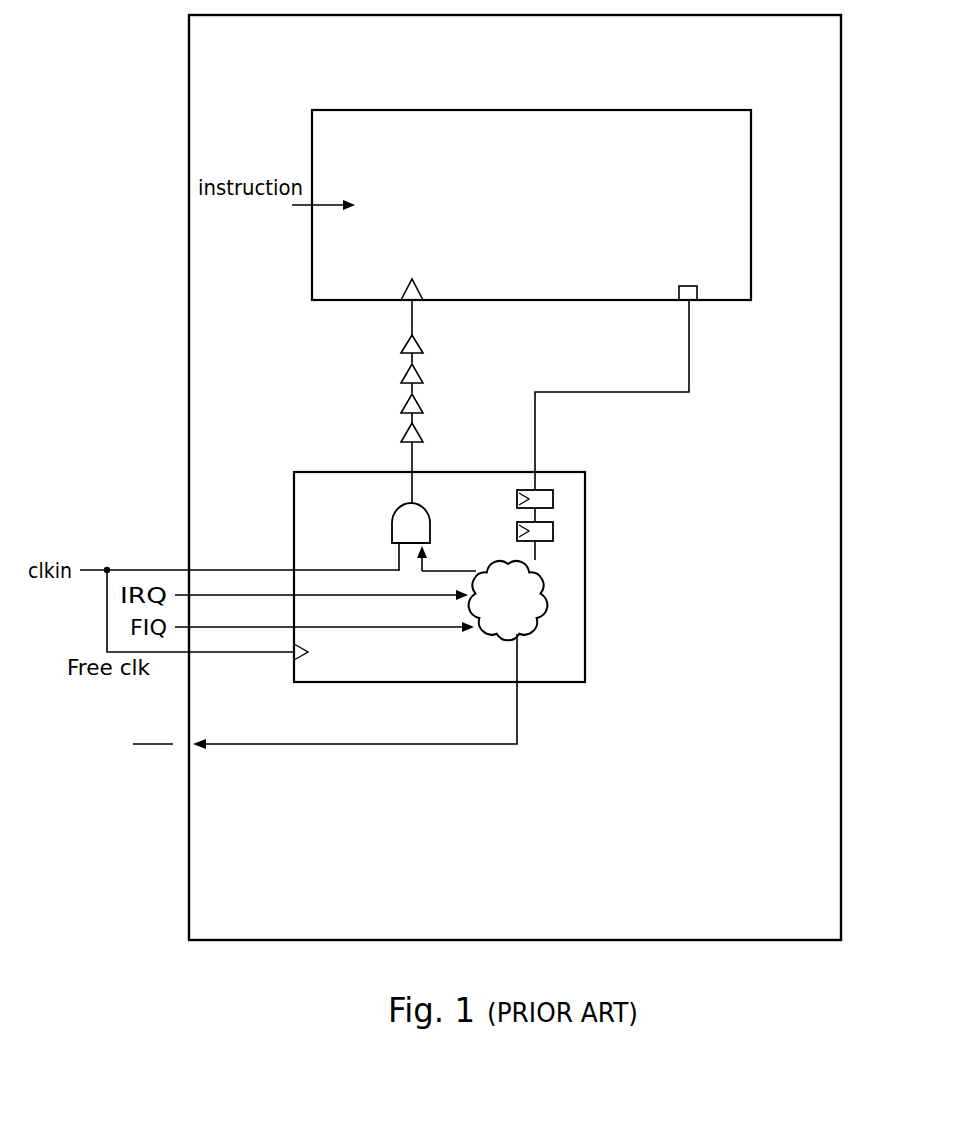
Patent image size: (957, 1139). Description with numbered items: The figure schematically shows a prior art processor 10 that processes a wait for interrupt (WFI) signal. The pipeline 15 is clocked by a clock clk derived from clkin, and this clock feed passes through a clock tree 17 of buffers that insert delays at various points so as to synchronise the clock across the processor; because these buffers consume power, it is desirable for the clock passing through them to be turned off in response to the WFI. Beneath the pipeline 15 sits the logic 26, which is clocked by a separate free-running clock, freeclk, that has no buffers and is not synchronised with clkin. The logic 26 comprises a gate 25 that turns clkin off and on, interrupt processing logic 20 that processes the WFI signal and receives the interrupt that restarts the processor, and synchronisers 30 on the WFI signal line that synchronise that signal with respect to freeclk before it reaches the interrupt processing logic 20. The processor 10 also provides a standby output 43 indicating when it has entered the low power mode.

The processor 10 is at (841, 495).
The pipeline 15 is at (751, 200).
The clock tree 17 is at (389, 333).
The interrupt processing logic 20 is at (541, 614).
The gate 25 is at (430, 520).
The logic 26 is at (585, 492).
The synchronisers 30 is at (559, 490).
The standby output 43 is at (173, 745).